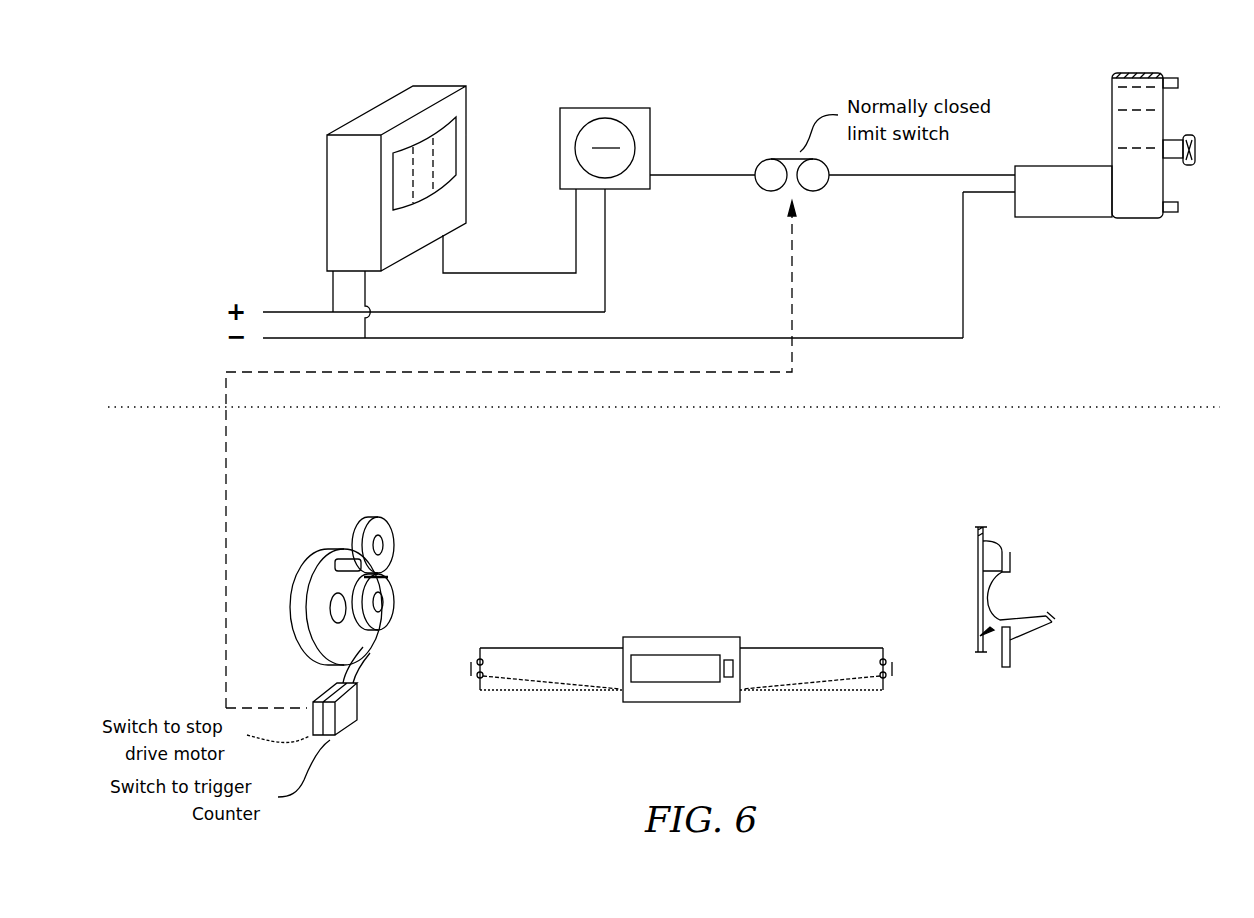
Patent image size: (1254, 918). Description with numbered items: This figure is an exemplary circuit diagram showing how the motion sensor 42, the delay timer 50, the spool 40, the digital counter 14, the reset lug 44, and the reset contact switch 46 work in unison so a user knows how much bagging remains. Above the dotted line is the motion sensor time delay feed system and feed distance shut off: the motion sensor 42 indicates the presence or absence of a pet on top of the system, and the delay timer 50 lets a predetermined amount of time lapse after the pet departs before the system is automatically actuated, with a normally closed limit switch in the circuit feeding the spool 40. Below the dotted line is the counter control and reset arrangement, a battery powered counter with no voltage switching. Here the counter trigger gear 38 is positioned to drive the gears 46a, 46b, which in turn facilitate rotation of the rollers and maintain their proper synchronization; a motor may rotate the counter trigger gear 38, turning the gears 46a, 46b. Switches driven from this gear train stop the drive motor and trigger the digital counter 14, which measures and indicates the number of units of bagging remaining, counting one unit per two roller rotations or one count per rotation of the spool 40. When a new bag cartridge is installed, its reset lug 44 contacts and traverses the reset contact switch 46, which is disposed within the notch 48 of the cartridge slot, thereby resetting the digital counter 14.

The digital counter 14 is at (672, 637).
The counter trigger gear 38 is at (308, 566).
The spool 40 is at (1088, 218).
The motion sensor 42 is at (362, 114).
The reset lug 44 is at (978, 552).
The reset contact switch 46 is at (1018, 596).
The gear 46a is at (362, 522).
The gear 46b is at (380, 630).
The notch 48 is at (978, 637).
The delay timer 50 is at (605, 108).